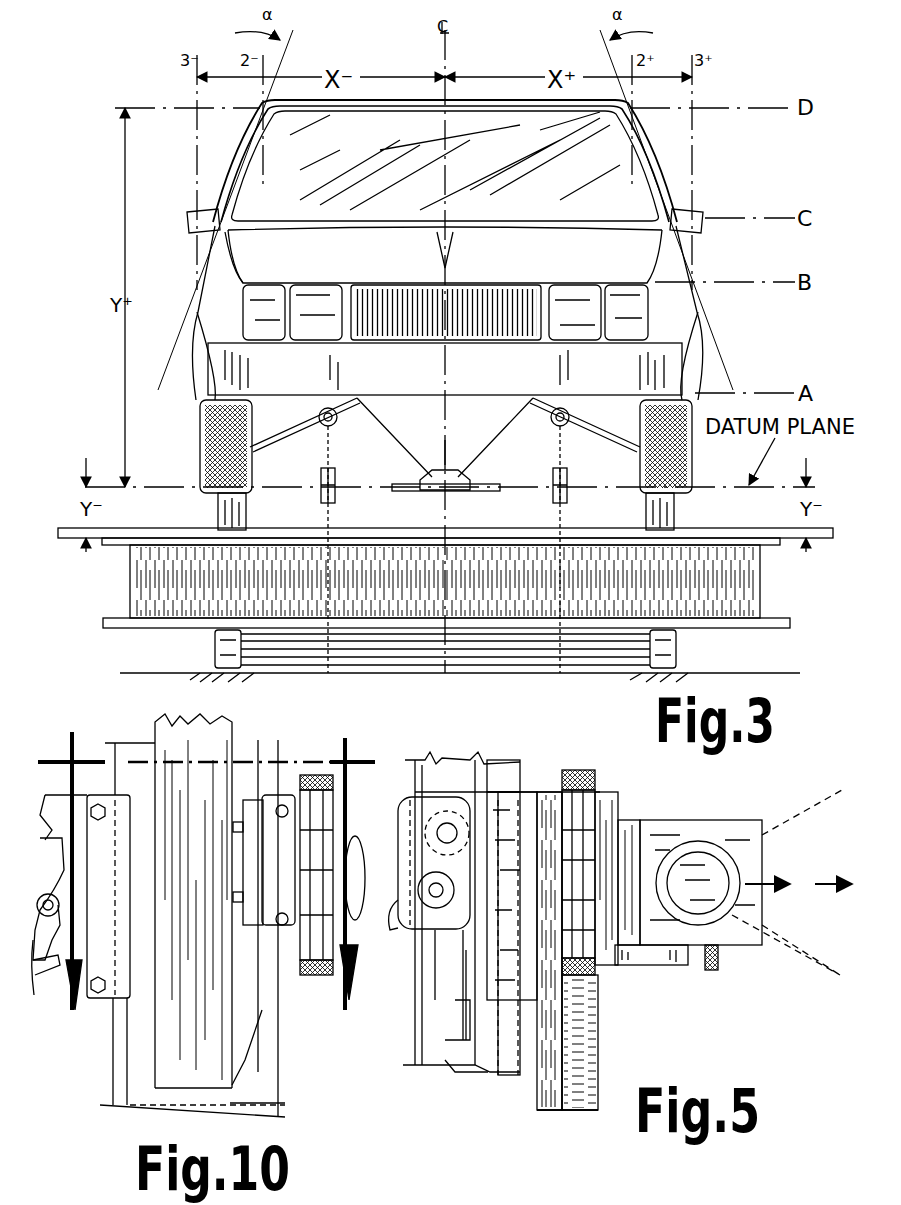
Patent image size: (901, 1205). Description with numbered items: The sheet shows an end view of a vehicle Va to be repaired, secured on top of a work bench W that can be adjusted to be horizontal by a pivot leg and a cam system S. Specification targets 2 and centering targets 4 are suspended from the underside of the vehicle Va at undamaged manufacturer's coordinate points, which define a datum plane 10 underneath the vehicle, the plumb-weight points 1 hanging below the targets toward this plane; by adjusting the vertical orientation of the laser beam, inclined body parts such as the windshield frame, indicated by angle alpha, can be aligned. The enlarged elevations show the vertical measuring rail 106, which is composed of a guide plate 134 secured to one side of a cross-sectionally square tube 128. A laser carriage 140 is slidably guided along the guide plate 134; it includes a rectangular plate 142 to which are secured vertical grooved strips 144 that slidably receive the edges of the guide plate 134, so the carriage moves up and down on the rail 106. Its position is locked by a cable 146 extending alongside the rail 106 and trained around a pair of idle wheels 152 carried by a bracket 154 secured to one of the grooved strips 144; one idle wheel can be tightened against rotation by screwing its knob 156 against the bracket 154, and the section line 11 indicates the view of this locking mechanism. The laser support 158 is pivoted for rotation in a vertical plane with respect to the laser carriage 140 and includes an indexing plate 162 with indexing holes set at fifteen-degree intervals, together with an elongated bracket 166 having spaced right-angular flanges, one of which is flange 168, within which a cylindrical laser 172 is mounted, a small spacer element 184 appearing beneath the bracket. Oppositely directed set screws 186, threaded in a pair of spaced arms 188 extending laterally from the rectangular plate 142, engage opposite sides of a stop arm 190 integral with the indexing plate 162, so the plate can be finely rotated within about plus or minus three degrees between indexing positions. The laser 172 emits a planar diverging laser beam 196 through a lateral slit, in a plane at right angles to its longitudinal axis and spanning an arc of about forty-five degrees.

In FIG. 3, the plumb weight 1 is at (447, 479).
In FIG. 3, the specification targets 2 is at (334, 470).
In FIG. 3, the centering targets 4 is at (454, 472).
In FIG. 3, the datum plane 10 is at (773, 487).
In FIG. 3, the vehicle Va is at (205, 268).
In FIG. 3, the work bench W is at (135, 575).
In FIG. 3, the cam system S is at (680, 650).
In FIG. 10, the section line 11 is at (205, 857).
In FIG. 10, the vertical measuring rail 106 is at (287, 1091).
In FIG. 5, the vertical measuring rail 106 is at (465, 1074).
In FIG. 10, the cross-sectionally square tube 128 is at (113, 1105).
In FIG. 5, the cross-sectionally square tube 128 is at (425, 1066).
In FIG. 10, the guide plate 134 is at (130, 1038).
In FIG. 5, the guide plate 134 is at (510, 1076).
In FIG. 5, the laser carriage 140 is at (556, 1115).
In FIG. 5, the rectangular plate 142 is at (555, 1070).
In FIG. 10, the grooved strips 144 is at (82, 1000).
In FIG. 5, the grooved strips 144 is at (480, 775).
In FIG. 10, the cable 146 is at (248, 745).
In FIG. 5, the cable 146 is at (437, 775).
In FIG. 10, the idle wheels 152 is at (278, 795).
In FIG. 5, the idle wheels 152 is at (455, 808).
In FIG. 5, the bracket 154 is at (400, 930).
In FIG. 10, the knob 156 is at (250, 945).
In FIG. 10, the laser support 158 is at (48, 832).
In FIG. 5, the laser support 158 is at (540, 792).
In FIG. 5, the indexing plate 162 is at (592, 1033).
In FIG. 5, the elongated bracket 166 is at (632, 952).
In FIG. 5, the right angular flange 168 is at (762, 906).
In FIG. 10, the cylindrical laser 172 is at (62, 972).
In FIG. 5, the cylindrical laser 172 is at (730, 882).
In FIG. 5, the spacer 184 is at (718, 956).
In FIG. 10, the set screws 186 is at (336, 782).
In FIG. 5, the set screws 186 is at (585, 770).
In FIG. 10, the spaced arms 188 is at (336, 812).
In FIG. 5, the spaced arms 188 is at (598, 865).
In FIG. 10, the stop arm 190 is at (360, 905).
In FIG. 5, the stop arm 190 is at (604, 858).
In FIG. 5, the planar diverging laser beam 196 is at (795, 803).